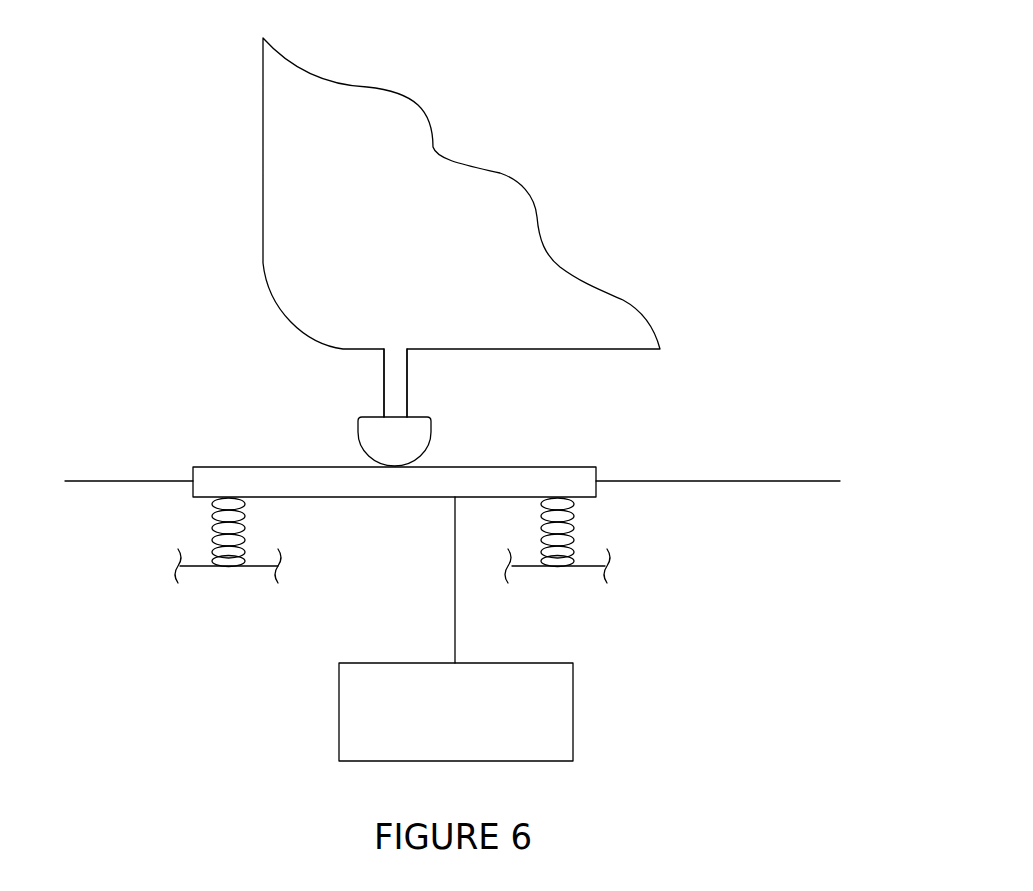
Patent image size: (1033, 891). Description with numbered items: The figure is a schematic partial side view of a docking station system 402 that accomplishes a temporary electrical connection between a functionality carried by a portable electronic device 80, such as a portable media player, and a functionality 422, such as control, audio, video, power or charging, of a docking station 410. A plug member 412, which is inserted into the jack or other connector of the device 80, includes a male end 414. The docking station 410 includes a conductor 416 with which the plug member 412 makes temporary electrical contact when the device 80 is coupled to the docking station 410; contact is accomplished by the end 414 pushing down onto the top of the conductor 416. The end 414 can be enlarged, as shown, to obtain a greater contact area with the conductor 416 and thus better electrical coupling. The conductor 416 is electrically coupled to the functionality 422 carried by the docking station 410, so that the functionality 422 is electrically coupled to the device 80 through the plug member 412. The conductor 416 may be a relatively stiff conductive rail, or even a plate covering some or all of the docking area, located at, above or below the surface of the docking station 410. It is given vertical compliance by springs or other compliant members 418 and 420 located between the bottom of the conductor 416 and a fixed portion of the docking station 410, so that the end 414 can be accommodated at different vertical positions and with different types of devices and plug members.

The portable electronic device 80 is at (263, 161).
The docking station system 402 is at (668, 430).
The docking station 410 is at (715, 487).
The plug member 412 is at (384, 377).
The male end 414 is at (415, 438).
The conductor 416 is at (235, 467).
The compliant member 418 is at (212, 510).
The compliant member 420 is at (575, 505).
The functionality 422 is at (492, 663).